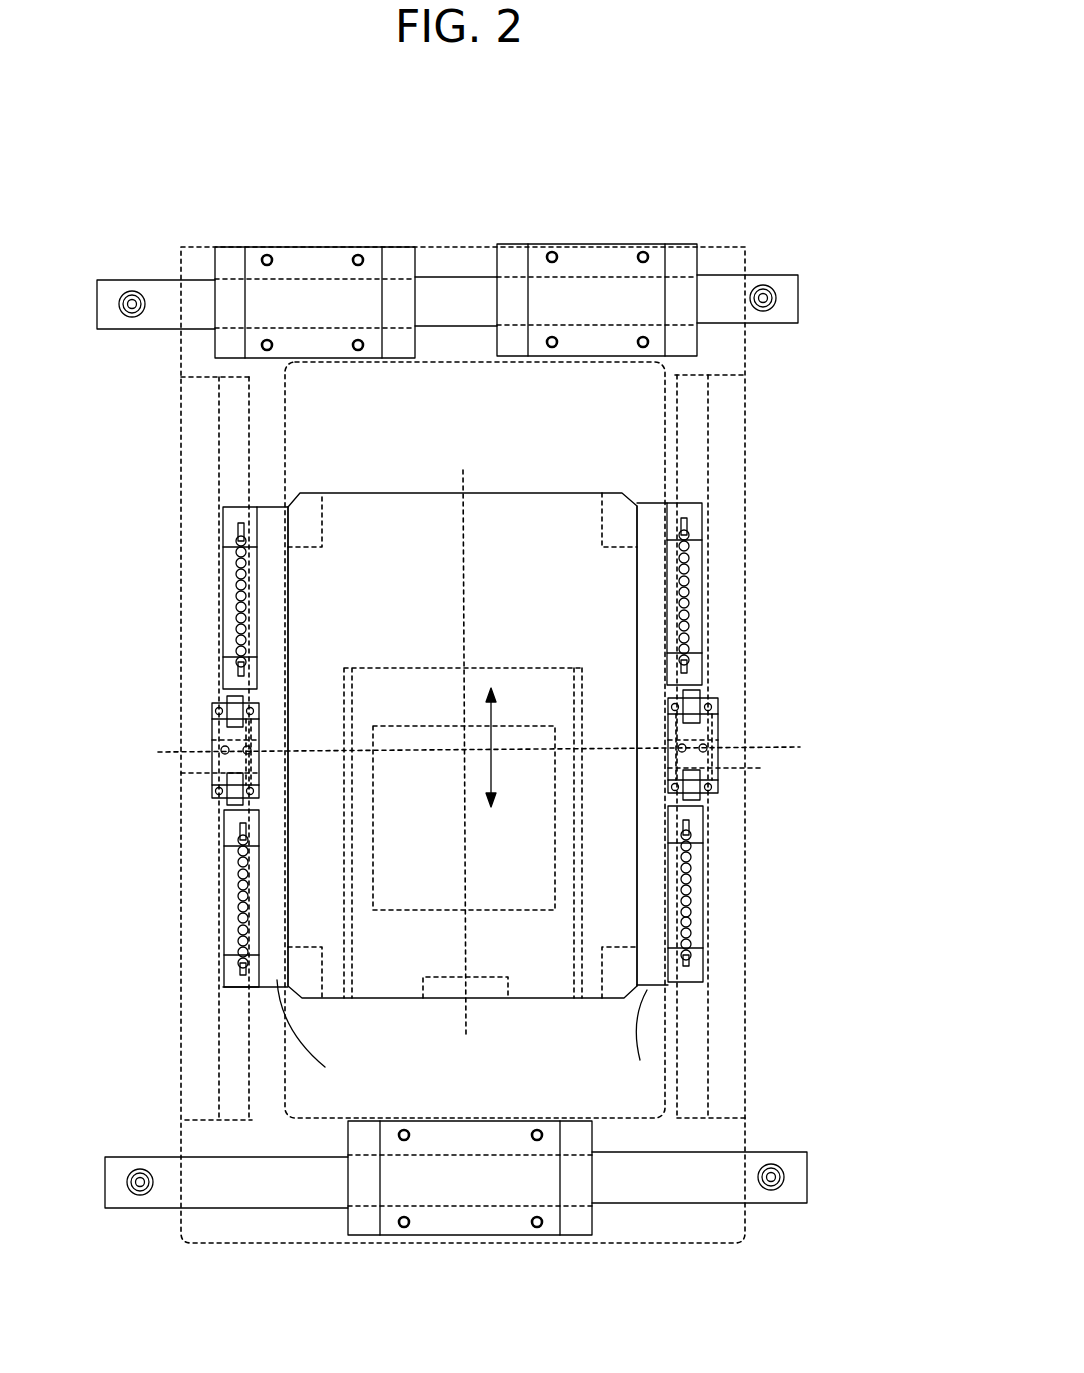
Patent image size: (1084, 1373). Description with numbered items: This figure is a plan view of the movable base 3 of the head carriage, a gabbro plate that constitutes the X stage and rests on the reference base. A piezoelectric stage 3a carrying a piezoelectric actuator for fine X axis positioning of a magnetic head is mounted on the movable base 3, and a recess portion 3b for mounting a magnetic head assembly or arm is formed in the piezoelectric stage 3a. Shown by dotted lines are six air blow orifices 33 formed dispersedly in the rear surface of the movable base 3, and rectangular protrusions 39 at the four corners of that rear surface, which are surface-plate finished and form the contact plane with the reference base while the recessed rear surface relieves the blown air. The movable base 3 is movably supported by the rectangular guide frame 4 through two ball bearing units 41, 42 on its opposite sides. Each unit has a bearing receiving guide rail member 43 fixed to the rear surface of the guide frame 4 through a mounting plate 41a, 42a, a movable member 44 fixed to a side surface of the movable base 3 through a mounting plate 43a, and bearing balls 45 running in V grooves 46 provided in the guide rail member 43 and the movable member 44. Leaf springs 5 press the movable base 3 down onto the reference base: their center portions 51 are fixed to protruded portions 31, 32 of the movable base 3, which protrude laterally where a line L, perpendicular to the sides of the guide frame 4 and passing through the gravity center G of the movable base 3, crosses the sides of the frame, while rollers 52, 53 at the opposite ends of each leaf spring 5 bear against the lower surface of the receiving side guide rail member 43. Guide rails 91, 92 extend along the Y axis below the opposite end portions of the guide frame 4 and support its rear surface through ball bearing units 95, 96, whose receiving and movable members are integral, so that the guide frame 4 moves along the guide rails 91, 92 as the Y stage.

The movable base 3 is at (487, 505).
The piezoelectric stage 3a is at (505, 668).
The recess portion 3b is at (493, 990).
The guide frame 4 is at (710, 1106).
The leaf spring 5 is at (208, 735).
The protruded portion 31 is at (735, 768).
The protruded portion 32 is at (210, 773).
The air blow orifice 33 is at (572, 562).
The protrusion 39 is at (305, 505).
The ball bearing unit 41 is at (708, 868).
The mounting plate 41a is at (740, 413).
The ball bearing unit 42 is at (224, 922).
The mounting plate 42a is at (182, 437).
The bearing receiving guide rail member 43 is at (232, 1030).
The mounting plate 43a is at (472, 1041).
The movable member 44 is at (225, 575).
The bearing balls 45 is at (240, 607).
The V groove 46 is at (238, 528).
The center portion 51 is at (223, 750).
The roller 52 is at (221, 800).
The roller 53 is at (222, 711).
The guide rail 91 is at (797, 285).
The guide rail 92 is at (798, 1165).
The ball bearing unit 95 is at (313, 253).
The ball bearing unit 96 is at (493, 1237).
The gravity center G is at (474, 747).
The line L is at (800, 750).